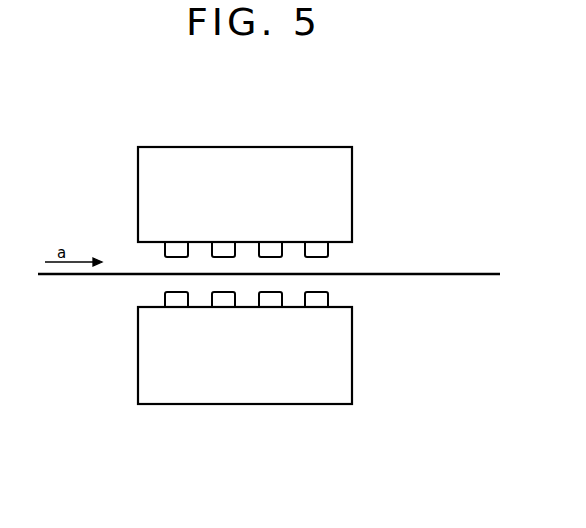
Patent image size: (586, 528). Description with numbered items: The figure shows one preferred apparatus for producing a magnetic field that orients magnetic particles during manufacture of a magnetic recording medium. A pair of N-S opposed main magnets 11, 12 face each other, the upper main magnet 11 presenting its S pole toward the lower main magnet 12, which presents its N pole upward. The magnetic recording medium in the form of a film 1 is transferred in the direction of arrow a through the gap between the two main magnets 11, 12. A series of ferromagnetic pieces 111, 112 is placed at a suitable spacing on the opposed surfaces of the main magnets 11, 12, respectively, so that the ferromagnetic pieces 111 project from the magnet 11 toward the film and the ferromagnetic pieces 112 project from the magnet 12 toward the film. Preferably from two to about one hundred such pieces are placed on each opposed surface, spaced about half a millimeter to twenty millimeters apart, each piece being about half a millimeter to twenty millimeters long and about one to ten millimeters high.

The film 1 is at (477, 274).
The main magnet 11 is at (342, 173).
The main magnet 12 is at (337, 388).
The ferromagnetic pieces 111 is at (329, 254).
The ferromagnetic pieces 112 is at (327, 295).